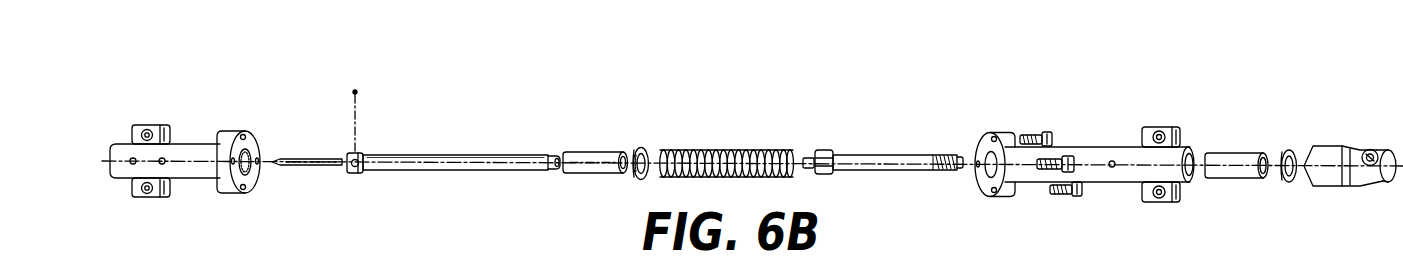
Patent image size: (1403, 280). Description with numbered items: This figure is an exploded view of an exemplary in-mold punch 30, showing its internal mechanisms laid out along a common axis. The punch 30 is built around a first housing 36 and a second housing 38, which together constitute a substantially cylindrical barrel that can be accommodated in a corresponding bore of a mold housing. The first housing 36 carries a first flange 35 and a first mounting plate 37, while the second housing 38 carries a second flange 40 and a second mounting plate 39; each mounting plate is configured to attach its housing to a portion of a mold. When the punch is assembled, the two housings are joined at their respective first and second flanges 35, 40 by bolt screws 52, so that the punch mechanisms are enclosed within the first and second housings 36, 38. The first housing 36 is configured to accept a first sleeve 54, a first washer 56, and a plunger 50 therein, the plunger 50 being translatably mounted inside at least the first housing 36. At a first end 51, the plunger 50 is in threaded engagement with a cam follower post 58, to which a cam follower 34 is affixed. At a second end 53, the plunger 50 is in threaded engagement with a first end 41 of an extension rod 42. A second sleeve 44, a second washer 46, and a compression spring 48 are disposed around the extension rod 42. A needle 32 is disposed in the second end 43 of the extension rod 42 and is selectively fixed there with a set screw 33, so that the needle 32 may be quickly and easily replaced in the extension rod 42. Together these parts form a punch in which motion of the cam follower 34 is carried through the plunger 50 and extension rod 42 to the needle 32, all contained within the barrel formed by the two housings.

The punch 30 is at (1072, 56).
The needle 32 is at (308, 157).
The set screw 33 is at (357, 94).
The cam follower 34 is at (1367, 149).
The first flange 35 is at (987, 130).
The first housing 36 is at (1112, 184).
The first mounting plate 37 is at (1162, 127).
The second housing 38 is at (195, 143).
The second mounting plate 39 is at (150, 124).
The second flange 40 is at (232, 194).
The first end of extension rod 41 is at (557, 150).
The extension rod 42 is at (447, 153).
The second end of extension rod 43 is at (366, 148).
The second sleeve 44 is at (597, 152).
The second washer 46 is at (645, 148).
The compression spring 48 is at (715, 152).
The plunger 50 is at (878, 155).
The first end of plunger 51 is at (952, 155).
The bolt screws 52 is at (1032, 132).
The second end of plunger 53 is at (813, 150).
The first sleeve 54 is at (1235, 178).
The first washer 56 is at (1287, 182).
The cam follower post 58 is at (1333, 187).